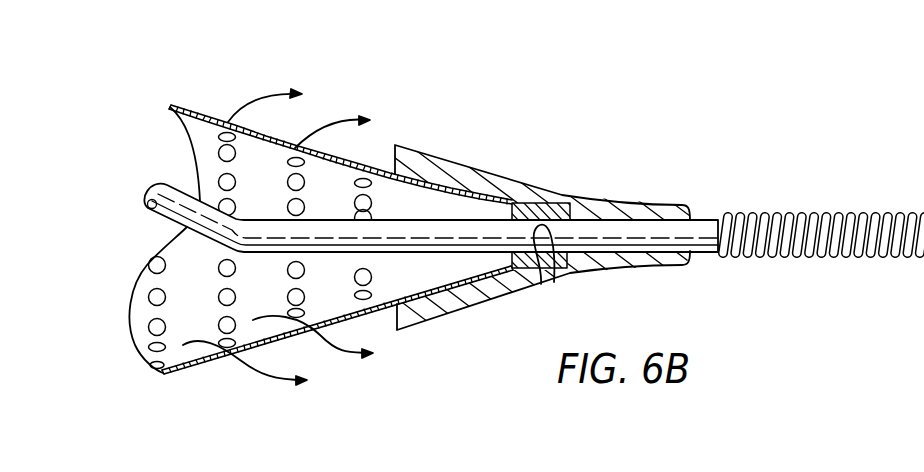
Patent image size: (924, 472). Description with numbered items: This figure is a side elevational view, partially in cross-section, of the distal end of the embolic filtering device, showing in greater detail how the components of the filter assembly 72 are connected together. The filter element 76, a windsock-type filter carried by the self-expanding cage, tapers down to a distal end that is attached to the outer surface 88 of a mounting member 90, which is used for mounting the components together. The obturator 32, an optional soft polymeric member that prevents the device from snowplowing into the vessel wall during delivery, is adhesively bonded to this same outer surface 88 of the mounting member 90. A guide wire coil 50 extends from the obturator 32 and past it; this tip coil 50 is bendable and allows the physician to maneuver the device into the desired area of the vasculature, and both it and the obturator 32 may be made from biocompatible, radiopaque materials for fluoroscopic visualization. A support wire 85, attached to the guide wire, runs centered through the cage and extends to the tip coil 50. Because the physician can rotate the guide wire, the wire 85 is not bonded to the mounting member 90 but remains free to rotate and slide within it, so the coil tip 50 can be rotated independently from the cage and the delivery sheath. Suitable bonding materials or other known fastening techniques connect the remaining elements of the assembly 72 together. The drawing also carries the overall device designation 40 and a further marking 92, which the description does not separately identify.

The catheter assembly 40 is at (923, 64).
The guide wire coil 50 is at (833, 216).
The obturator 32 is at (460, 163).
The filter assembly 72 is at (282, 131).
The filter element 76 is at (204, 118).
The support wire 85 is at (397, 299).
The outer surface 88 is at (561, 203).
The mounting member 90 is at (568, 270).
The suture loop 92 is at (541, 284).